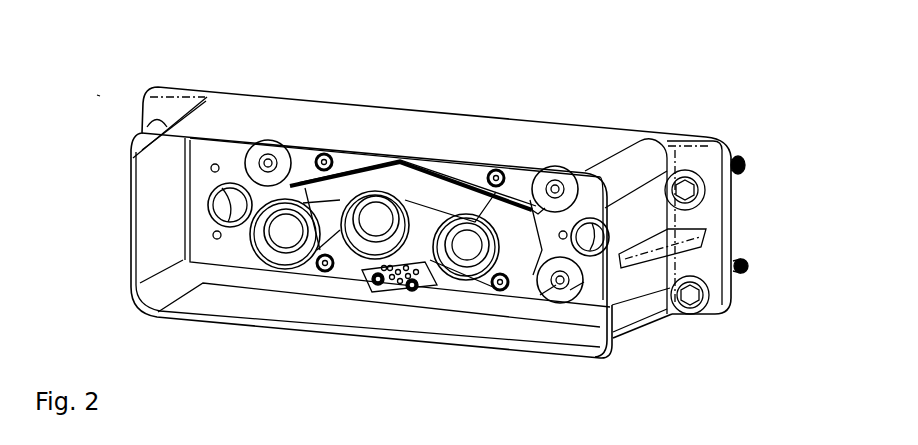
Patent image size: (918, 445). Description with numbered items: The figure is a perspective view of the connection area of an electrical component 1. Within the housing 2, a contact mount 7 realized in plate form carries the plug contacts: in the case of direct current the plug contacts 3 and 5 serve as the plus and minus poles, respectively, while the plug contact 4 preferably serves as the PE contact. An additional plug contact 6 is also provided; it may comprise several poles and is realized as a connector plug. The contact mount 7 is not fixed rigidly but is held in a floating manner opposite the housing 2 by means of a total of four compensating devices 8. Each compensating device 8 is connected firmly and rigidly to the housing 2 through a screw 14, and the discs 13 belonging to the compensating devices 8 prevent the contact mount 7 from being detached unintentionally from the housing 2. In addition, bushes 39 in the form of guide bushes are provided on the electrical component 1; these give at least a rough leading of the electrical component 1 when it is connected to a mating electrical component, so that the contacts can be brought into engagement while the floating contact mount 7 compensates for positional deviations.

The electrical component 1 is at (97, 95).
The housing 2 is at (228, 105).
The plug contact 3 is at (285, 232).
The plug contact 4 is at (377, 215).
The plug contact 5 is at (468, 250).
The additional plug contact 6 is at (414, 290).
The contact mount 7 is at (232, 152).
The compensating device 8 is at (283, 157).
The disc 13 is at (548, 290).
The screw 14 is at (577, 285).
The bush 39 is at (218, 205).